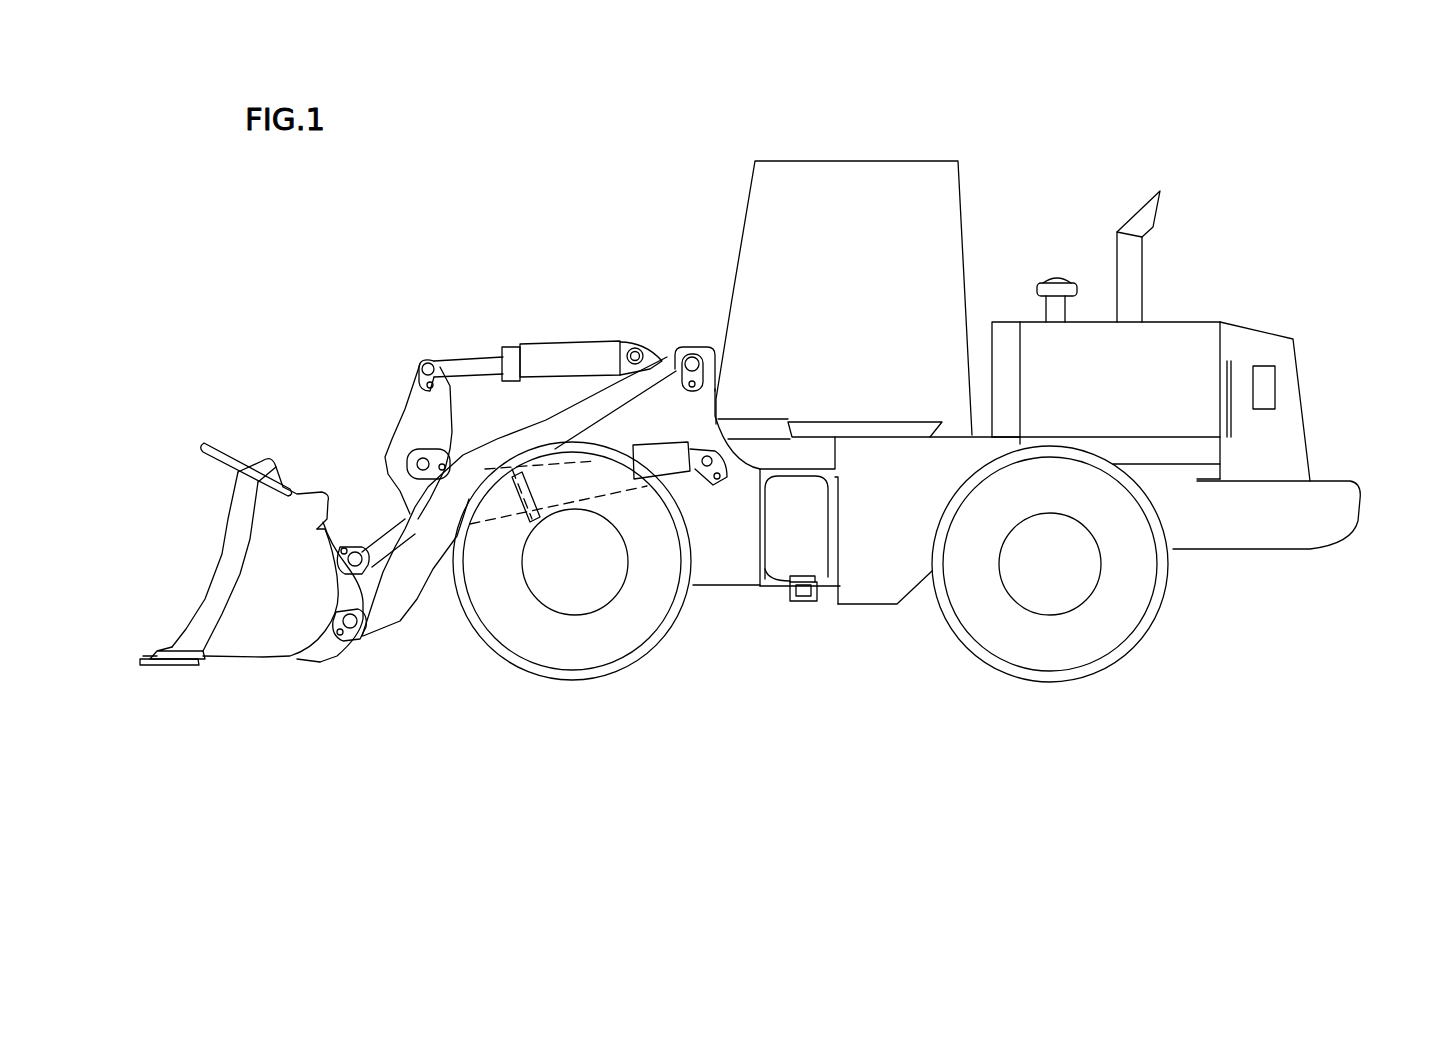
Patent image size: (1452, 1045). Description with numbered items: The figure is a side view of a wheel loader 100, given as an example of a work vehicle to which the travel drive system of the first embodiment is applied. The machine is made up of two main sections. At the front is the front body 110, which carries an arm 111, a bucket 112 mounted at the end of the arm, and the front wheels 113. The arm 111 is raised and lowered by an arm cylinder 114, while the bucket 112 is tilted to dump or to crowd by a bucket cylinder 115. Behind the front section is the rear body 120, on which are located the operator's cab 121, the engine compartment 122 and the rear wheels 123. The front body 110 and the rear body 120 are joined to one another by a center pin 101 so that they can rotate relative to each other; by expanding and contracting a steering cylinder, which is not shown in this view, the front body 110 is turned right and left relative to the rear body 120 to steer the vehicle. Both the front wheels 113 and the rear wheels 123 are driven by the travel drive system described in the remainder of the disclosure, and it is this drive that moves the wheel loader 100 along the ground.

The wheel loader 100 is at (1256, 597).
The center pin 101 is at (802, 603).
The front body 110 is at (670, 360).
The arm 111 is at (397, 548).
The bucket 112 is at (253, 480).
The front wheels 113 is at (560, 640).
The arm cylinder 114 is at (520, 520).
The bucket cylinder 115 is at (560, 347).
The rear body 120 is at (1327, 508).
The operator's cab 121 is at (800, 183).
The engine compartment 122 is at (1198, 347).
The rear wheels 123 is at (1072, 648).